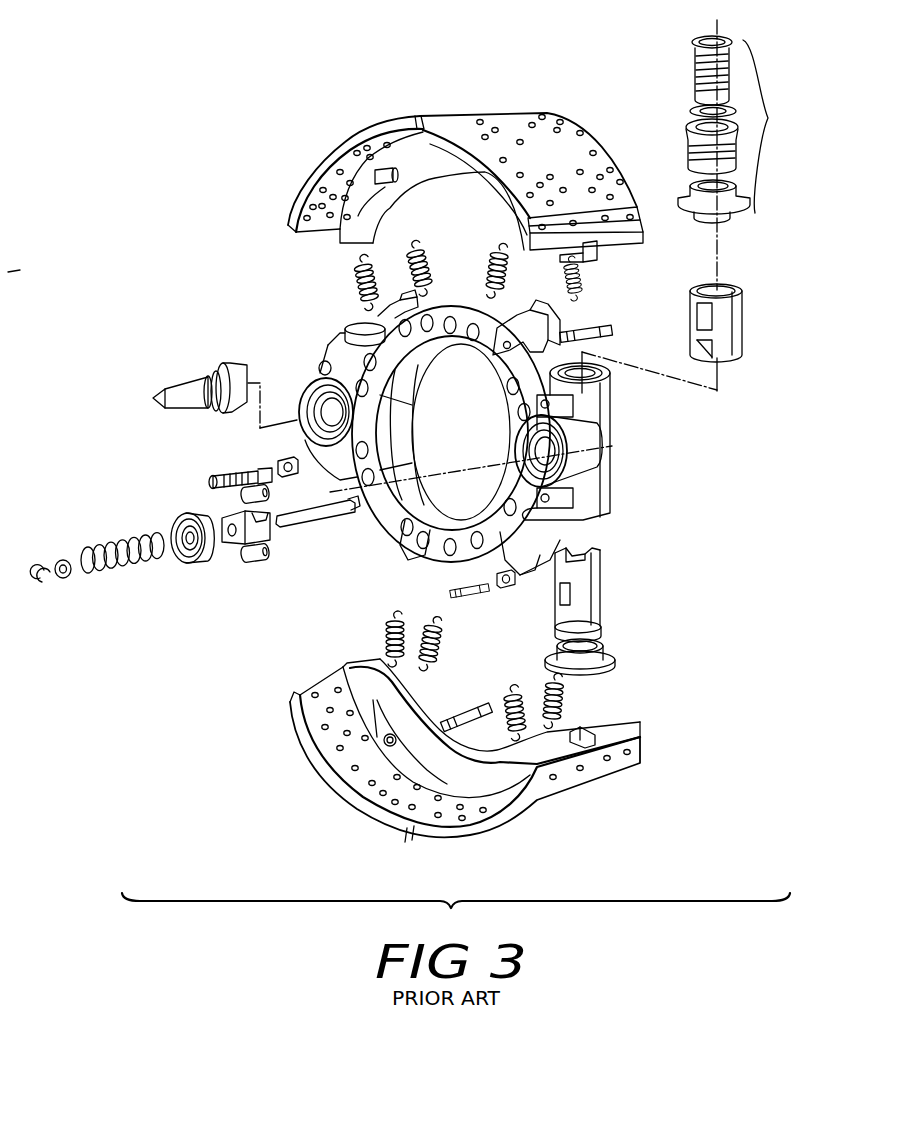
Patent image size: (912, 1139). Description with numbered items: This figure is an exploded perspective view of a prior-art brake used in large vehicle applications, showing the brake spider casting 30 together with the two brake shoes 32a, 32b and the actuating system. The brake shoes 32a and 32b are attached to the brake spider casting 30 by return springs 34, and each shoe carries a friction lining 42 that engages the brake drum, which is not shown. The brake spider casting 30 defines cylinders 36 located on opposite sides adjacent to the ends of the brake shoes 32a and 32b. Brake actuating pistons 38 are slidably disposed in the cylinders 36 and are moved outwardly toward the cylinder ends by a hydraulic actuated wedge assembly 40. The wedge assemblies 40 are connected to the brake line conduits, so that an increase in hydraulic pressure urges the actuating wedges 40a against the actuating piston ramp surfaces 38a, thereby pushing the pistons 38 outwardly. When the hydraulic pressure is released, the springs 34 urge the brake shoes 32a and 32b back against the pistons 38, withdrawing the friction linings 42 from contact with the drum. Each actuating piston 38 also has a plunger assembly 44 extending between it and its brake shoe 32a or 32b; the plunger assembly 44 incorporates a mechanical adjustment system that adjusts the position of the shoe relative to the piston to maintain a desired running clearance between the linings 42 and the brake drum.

The brake spider casting 30 is at (417, 545).
The brake shoe 32a is at (340, 233).
The brake shoe 32b is at (350, 672).
The return springs 34 is at (418, 277).
The cylinders 36 is at (328, 355).
The brake actuating pistons 38 is at (742, 335).
The actuating piston ramp surfaces 38a is at (694, 350).
The hydraulic actuated wedge assembly 40 is at (185, 368).
The actuating wedges 40a is at (345, 515).
The friction linings 42 is at (300, 178).
The plunger assembly 44 is at (743, 129).